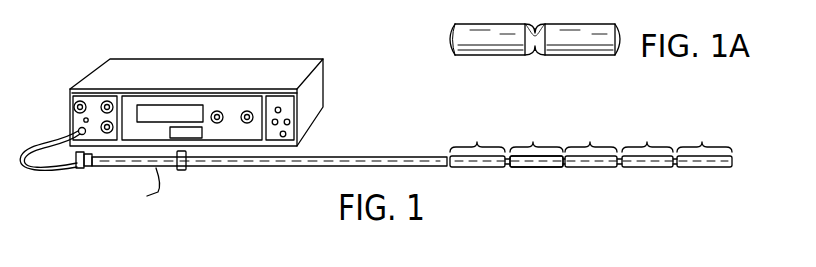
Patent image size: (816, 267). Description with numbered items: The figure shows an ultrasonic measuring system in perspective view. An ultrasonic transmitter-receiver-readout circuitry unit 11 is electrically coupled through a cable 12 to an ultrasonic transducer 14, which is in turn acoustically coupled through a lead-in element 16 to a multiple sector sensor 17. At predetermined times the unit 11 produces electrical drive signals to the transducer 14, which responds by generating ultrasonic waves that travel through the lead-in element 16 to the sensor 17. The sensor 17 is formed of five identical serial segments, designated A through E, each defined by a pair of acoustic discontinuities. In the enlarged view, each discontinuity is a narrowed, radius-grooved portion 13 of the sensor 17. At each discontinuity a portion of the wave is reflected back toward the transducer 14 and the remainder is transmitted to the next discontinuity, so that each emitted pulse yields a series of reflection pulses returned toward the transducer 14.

In FIG. 1, the ultrasonic transmitter-receiver-readout circuitry unit 11 is at (272, 70).
In FIG. 1, the cable 12 is at (43, 151).
In FIG. 1A, the narrowed, radius-grooved portion 13 is at (532, 55).
In FIG. 1, the ultrasonic transducer 14 is at (173, 170).
In FIG. 1, the lead-in element 16 is at (393, 158).
In FIG. 1, the multiple sector sensor 17 is at (545, 168).
In FIG. 1A, the multiple sector sensor 17 is at (578, 54).